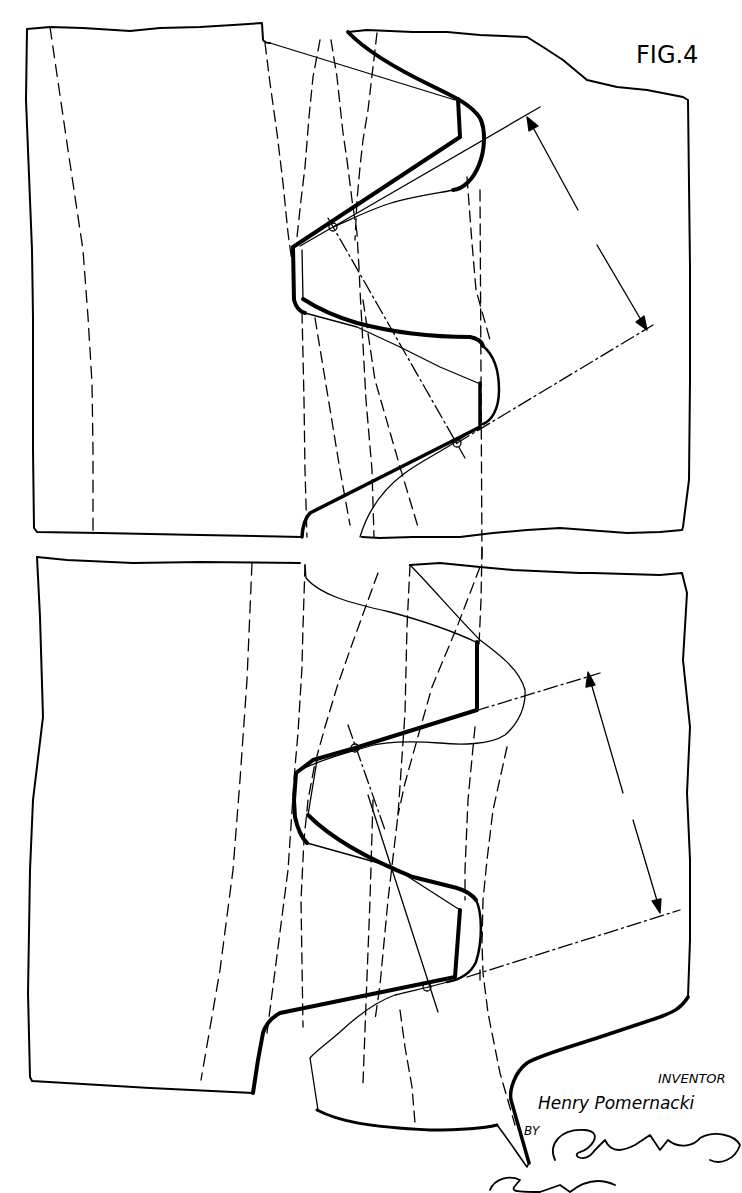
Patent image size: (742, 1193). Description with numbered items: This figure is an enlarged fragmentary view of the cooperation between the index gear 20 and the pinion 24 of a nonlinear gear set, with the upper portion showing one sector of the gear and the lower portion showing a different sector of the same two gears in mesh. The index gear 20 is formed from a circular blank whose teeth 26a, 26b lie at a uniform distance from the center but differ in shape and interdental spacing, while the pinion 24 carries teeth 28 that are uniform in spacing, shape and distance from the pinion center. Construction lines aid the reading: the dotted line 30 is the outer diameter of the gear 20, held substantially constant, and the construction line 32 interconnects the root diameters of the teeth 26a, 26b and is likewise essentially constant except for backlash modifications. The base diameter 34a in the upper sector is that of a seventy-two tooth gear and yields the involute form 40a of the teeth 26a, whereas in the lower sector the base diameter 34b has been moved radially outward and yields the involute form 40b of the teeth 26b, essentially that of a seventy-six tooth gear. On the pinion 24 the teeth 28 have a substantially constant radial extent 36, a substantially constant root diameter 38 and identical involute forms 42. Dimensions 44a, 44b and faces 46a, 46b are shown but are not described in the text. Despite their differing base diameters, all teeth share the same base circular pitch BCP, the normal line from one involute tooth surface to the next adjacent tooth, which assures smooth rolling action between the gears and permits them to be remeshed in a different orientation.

The index gear 20 is at (197, 499).
The pinion 24 is at (595, 497).
The teeth of index gear (72-tooth involute form) 26a is at (381, 121).
The teeth of index gear (76-tooth involute form) 26b is at (353, 665).
The pinion teeth 28 is at (410, 267).
The outer diameter of index gear 30 is at (483, 497).
The root diameter construction line 32 is at (302, 455).
The base diameter (72-tooth) 34a is at (93, 465).
The base diameter (76-tooth) 34b is at (245, 752).
The radial extent of pinion teeth 36 is at (325, 409).
The root diameter of pinion 38 is at (478, 203).
The involute form of teeth 26a 40a is at (407, 84).
The involute form of teeth 26b 40b is at (413, 615).
The involute form of pinion teeth 42 is at (405, 197).
The tooth width dimension 44a is at (337, 74).
The tooth width dimension 44b is at (403, 727).
The tooth face 46a is at (372, 77).
The tooth face line 46b is at (462, 606).
The base circular pitch BCP is at (506, 543).